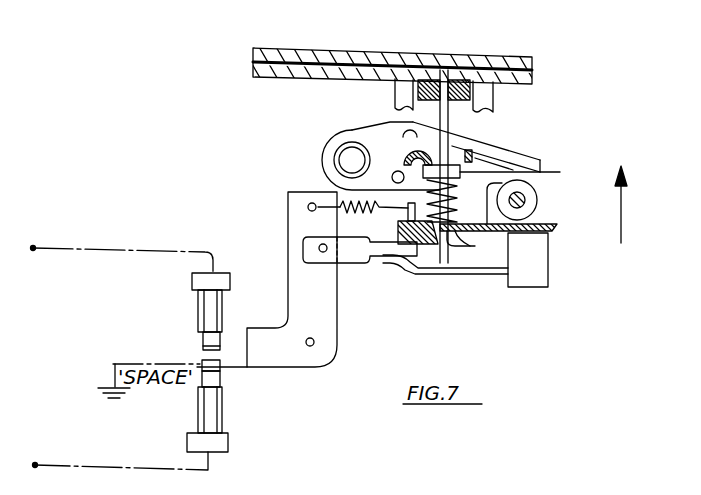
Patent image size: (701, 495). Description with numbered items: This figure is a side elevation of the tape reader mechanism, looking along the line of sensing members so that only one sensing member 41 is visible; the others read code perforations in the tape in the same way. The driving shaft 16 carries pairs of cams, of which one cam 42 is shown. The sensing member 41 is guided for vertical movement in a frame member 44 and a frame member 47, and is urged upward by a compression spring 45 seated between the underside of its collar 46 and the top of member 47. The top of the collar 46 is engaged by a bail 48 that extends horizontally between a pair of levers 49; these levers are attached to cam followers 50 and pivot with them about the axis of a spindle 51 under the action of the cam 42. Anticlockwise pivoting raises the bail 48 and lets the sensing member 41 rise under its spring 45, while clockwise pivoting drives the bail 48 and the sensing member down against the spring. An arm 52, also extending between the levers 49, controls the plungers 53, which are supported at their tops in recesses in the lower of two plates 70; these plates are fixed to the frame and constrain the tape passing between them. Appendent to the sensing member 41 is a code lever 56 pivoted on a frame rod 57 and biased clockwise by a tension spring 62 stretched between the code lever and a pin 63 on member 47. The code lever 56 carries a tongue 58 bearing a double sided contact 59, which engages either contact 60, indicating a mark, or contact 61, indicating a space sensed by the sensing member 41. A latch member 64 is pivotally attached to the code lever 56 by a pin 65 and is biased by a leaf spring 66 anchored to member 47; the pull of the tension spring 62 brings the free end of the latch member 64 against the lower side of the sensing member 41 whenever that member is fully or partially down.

The plates 70 is at (265, 55).
The plungers 53 is at (405, 93).
The arm 52 is at (503, 162).
The levers 49 is at (355, 138).
The spindle 51 is at (353, 161).
The bail 48 is at (410, 154).
The member 44 is at (476, 145).
The sensing members 41 is at (473, 159).
The cam followers 50 is at (520, 167).
The collar 46 is at (522, 169).
The cam 42 is at (538, 199).
The driving shaft 16 is at (524, 198).
The compression spring 45 is at (538, 217).
The member 47 is at (458, 243).
The leaf spring 66 is at (450, 276).
The pin 63 is at (408, 210).
The code lever 56 is at (296, 209).
The tension spring 62 is at (330, 192).
The rod 57 is at (314, 346).
The latch member 64 is at (352, 259).
The pin 65 is at (319, 248).
The contact 60 is at (218, 342).
The double sided contact 59 is at (203, 360).
The contact 61 is at (203, 387).
The tongue 58 is at (232, 370).